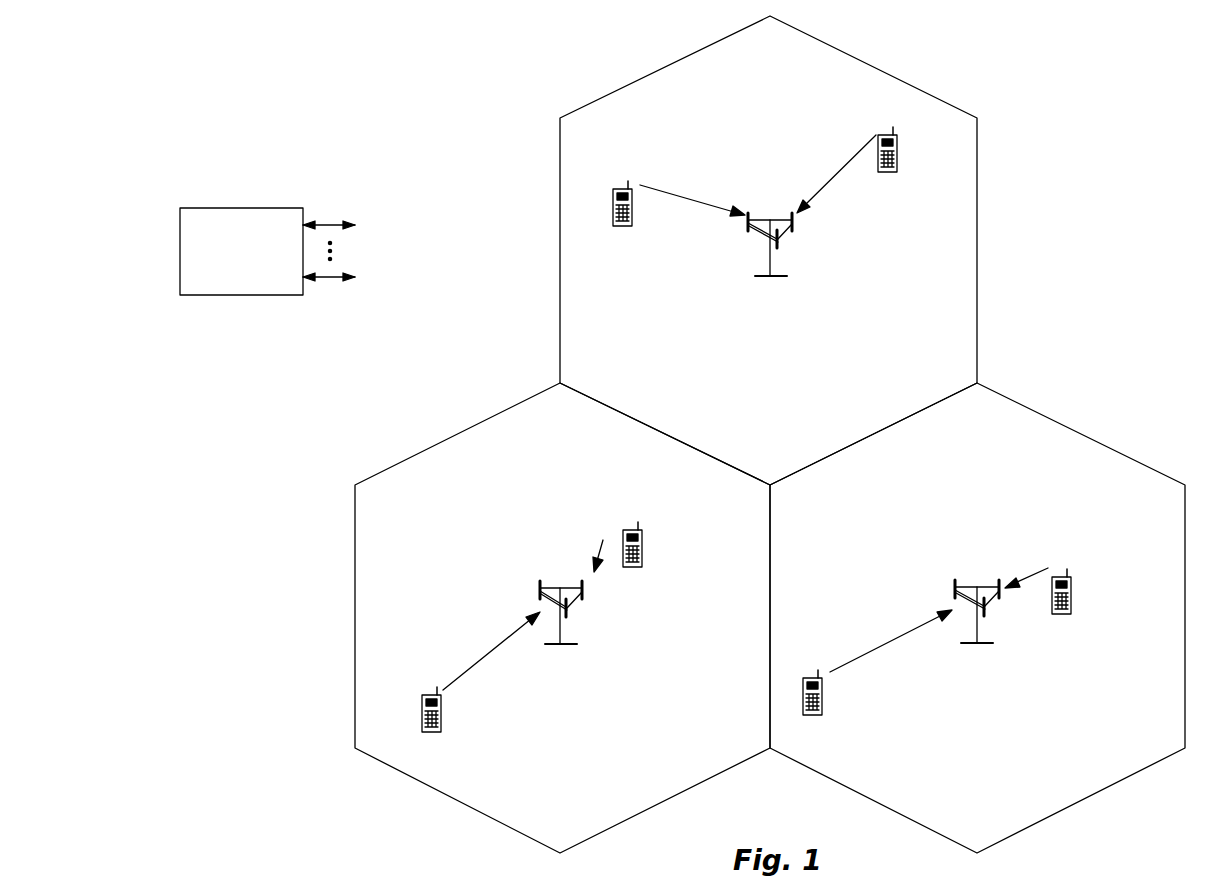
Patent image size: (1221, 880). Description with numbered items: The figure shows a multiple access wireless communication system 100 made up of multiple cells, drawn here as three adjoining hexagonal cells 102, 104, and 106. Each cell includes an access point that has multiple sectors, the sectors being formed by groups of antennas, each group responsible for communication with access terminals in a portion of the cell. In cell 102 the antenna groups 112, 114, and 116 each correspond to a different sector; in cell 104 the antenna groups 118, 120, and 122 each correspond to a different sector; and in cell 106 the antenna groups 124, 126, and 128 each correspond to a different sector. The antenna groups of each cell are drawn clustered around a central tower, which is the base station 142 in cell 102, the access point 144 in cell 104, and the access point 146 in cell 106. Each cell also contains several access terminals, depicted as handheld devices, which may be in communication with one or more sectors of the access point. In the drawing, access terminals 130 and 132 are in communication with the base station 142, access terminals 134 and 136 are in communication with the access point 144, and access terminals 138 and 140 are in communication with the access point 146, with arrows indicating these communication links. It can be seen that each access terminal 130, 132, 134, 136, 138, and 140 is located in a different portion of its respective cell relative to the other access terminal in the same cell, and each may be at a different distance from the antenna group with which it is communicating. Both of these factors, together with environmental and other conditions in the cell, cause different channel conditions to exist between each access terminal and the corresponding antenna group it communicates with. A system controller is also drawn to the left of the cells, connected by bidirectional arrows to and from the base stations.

The multiple access wireless communication system 100 is at (1143, 45).
The cell 102 is at (1001, 426).
The cell 104 is at (752, 523).
The cell 106 is at (608, 378).
The antenna group 112 is at (953, 585).
The antenna group 114 is at (987, 613).
The antenna group 116 is at (1002, 594).
The antenna group 118 is at (569, 613).
The antenna group 120 is at (585, 594).
The antenna group 122 is at (540, 582).
The antenna group 124 is at (748, 233).
The antenna group 126 is at (780, 248).
The antenna group 128 is at (795, 228).
The access terminal 130 is at (237, 208).
The access terminal 132 is at (818, 672).
The access terminal 134 is at (638, 524).
The access terminal 136 is at (437, 689).
The access terminal 138 is at (626, 182).
The access terminal 140 is at (893, 129).
The base station 142 is at (975, 585).
The access point 144 is at (558, 585).
The access point 146 is at (784, 203).